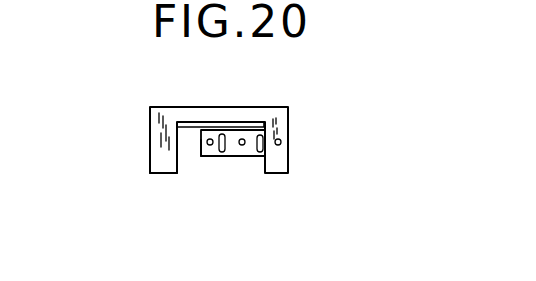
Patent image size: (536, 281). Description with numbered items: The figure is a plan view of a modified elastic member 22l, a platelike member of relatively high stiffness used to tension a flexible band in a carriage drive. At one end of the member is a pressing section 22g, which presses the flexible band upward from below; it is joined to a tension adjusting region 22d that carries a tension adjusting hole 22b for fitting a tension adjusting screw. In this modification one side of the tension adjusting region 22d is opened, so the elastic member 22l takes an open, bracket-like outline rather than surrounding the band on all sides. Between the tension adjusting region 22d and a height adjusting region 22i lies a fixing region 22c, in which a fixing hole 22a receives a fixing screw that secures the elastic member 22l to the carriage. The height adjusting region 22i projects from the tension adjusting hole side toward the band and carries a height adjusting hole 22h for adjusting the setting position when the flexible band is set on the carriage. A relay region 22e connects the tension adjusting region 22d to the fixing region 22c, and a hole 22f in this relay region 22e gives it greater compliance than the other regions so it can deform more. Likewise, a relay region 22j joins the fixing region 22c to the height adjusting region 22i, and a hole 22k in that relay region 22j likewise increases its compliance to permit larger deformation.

The fixing hole 22a is at (244, 146).
The tension adjusting hole 22b is at (281, 142).
The fixing region 22c is at (232, 157).
The tension adjusting region 22d is at (288, 113).
The relay region 22e is at (265, 126).
The hole 22f is at (264, 148).
The pressing section 22g is at (153, 148).
The height adjusting hole 22h is at (209, 139).
The height adjusting region 22i is at (202, 157).
The relay region 22j is at (230, 133).
The hole 22k is at (223, 154).
The elastic member 22l is at (160, 178).